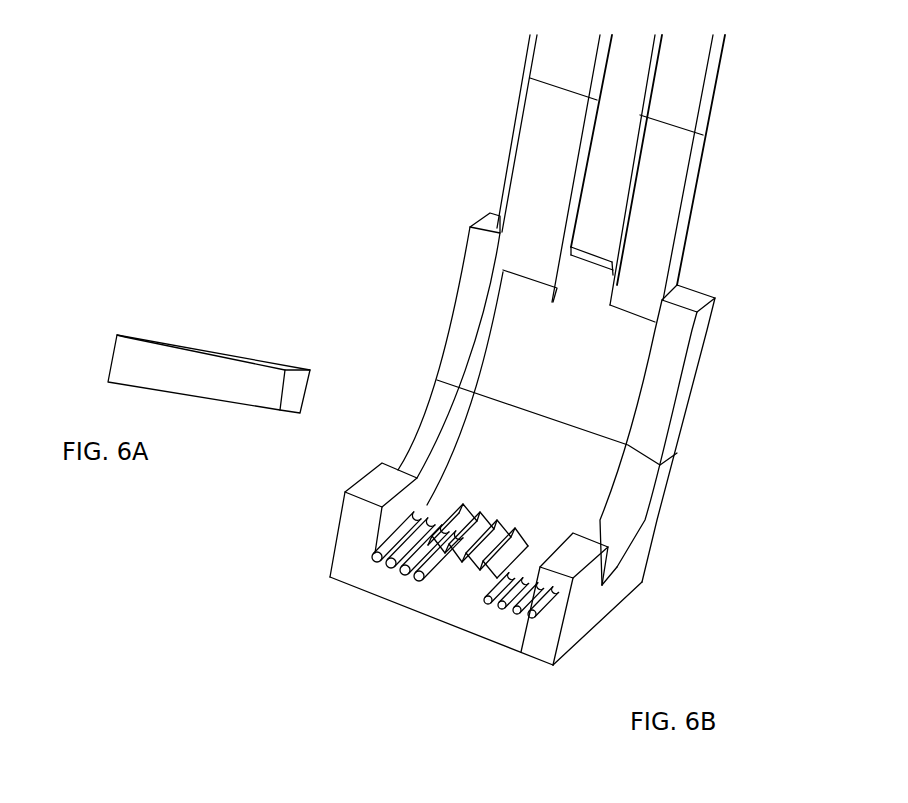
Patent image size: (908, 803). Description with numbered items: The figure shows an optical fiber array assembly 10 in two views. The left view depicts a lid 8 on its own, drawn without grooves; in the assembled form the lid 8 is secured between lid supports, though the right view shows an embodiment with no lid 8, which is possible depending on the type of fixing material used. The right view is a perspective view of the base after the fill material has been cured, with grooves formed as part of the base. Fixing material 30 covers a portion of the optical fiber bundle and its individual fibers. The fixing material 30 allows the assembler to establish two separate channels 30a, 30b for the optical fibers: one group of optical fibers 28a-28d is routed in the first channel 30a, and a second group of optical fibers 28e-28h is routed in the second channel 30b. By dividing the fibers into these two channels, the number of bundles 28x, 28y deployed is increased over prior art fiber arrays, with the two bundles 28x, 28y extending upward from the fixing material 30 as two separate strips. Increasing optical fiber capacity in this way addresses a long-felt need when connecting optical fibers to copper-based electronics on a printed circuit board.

In FIG. 6B, the cutting assembly 10 is at (192, 41).
In FIG. 6A, the lid 8 is at (400, 487).
In FIG. 6B, the bundle 28x is at (524, 124).
In FIG. 6B, the bundle 28y is at (682, 164).
In FIG. 6B, the fixing material 30 is at (567, 391).
In FIG. 6B, the channel 30a is at (476, 425).
In FIG. 6B, the channel 30b is at (609, 458).
In FIG. 6B, the optical fibers 28a-28d is at (382, 585).
In FIG. 6B, the optical fibers 28e-28h is at (487, 640).